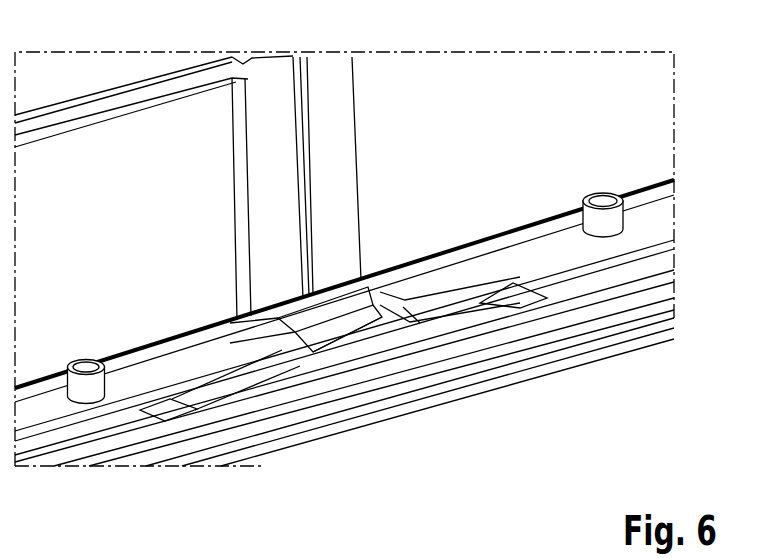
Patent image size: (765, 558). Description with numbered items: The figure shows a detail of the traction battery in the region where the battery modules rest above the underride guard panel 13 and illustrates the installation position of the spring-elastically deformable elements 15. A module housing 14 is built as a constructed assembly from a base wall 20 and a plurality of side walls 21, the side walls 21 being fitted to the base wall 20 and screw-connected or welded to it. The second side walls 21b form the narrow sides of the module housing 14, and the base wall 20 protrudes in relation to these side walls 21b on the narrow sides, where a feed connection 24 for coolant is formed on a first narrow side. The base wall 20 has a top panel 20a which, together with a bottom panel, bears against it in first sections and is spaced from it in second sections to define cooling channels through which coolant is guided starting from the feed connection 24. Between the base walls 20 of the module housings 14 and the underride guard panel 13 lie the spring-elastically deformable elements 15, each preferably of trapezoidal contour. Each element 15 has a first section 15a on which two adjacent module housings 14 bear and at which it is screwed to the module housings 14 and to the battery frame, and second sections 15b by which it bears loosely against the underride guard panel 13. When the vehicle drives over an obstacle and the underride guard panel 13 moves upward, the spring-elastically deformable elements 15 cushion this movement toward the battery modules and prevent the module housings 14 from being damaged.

The underride guard panel 13 is at (450, 398).
The module housing 14 is at (104, 424).
The spring-elastically deformable element 15 is at (300, 368).
The first section 15a is at (365, 345).
The second section 15b is at (173, 410).
The base wall 20 is at (150, 384).
The top panel 20a is at (245, 345).
The side wall 21 is at (132, 150).
The second side wall 21b is at (510, 88).
The feed connection 24 is at (86, 362).